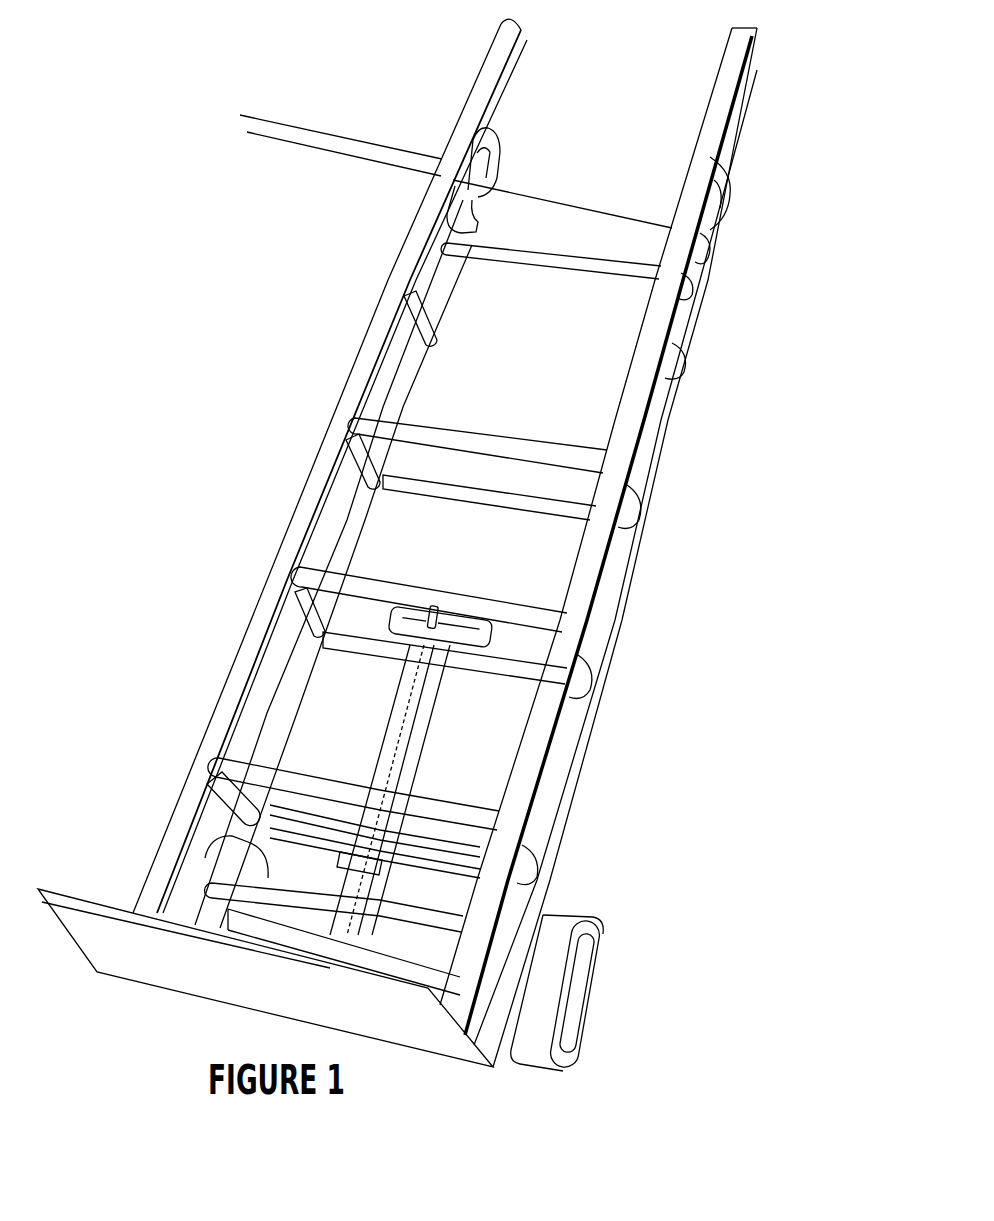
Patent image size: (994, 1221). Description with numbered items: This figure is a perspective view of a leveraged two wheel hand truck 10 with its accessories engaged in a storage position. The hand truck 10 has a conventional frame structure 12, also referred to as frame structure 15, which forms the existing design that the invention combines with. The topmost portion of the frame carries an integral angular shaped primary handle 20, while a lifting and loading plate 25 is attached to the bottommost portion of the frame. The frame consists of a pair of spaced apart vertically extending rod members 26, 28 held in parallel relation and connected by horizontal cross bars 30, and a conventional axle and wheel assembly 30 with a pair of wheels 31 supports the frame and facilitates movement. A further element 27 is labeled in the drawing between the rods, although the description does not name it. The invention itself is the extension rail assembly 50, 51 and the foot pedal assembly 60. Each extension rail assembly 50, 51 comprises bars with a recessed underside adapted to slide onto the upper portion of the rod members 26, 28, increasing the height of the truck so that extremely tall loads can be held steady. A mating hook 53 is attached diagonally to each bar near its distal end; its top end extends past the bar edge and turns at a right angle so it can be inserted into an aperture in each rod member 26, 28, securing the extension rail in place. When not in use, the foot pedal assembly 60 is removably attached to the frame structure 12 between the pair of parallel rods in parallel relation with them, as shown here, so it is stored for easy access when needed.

The hand truck 10 is at (197, 748).
The frame structure 12 is at (691, 288).
The frame structure 15 is at (408, 237).
The primary handle 20 is at (488, 160).
The loading plate 25 is at (102, 933).
The rod member 26 is at (377, 343).
The latch mechanism 27 is at (400, 637).
The rod member 28 is at (632, 417).
The axle and wheel assembly 30 is at (470, 818).
The wheel 31 is at (560, 958).
The extension rail assembly 50 is at (428, 168).
The extension rail assembly 51 is at (327, 142).
The hook 53 is at (710, 236).
The foot pedal assembly 60 is at (390, 730).